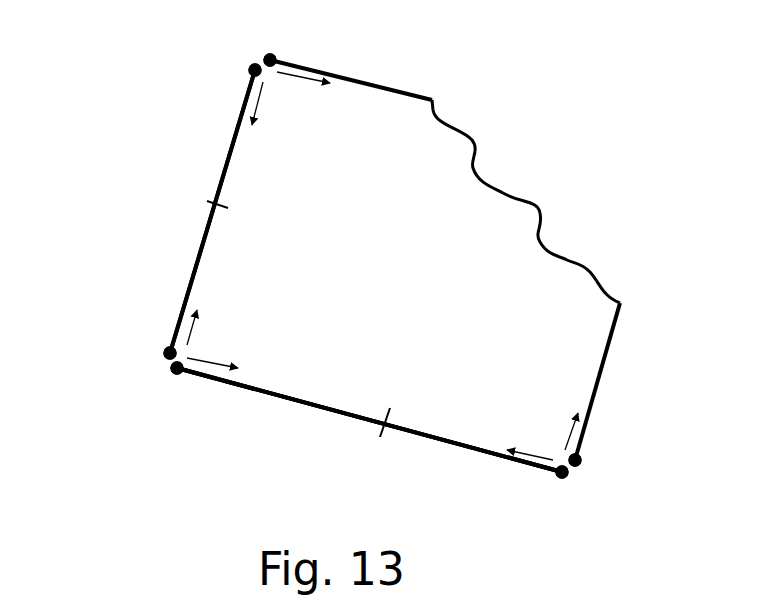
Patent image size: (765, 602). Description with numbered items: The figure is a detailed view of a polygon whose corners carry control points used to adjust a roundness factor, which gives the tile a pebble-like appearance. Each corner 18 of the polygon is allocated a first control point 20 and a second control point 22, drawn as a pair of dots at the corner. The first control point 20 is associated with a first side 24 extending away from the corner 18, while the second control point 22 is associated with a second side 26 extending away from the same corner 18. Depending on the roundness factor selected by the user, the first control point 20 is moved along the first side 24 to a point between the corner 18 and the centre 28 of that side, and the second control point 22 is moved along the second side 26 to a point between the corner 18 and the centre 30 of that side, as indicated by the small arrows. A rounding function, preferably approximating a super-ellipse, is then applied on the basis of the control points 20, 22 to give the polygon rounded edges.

The corner 18 is at (227, 41).
The first control point 20 is at (250, 68).
The second control point 22 is at (275, 56).
The first side 24 is at (207, 247).
The second side 26 is at (492, 452).
The centre of the first side 28 is at (210, 204).
The centre of the second side 30 is at (385, 418).